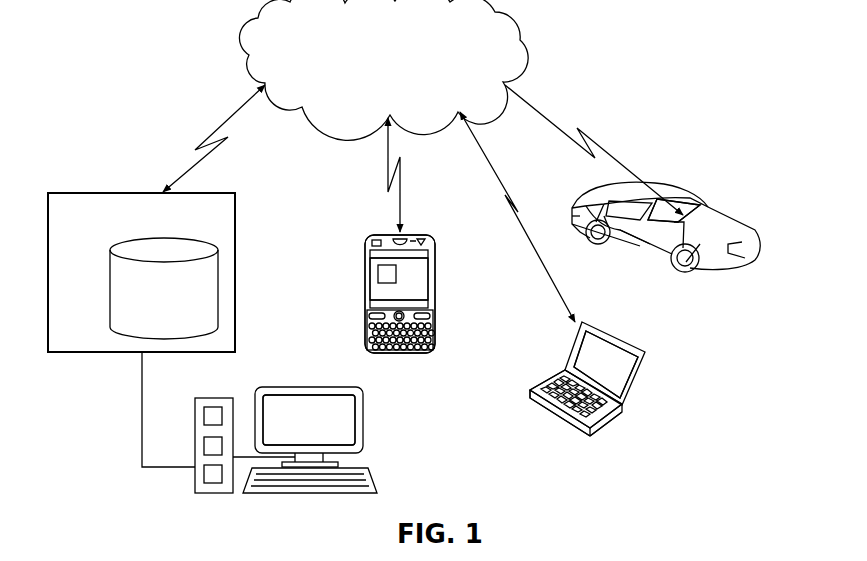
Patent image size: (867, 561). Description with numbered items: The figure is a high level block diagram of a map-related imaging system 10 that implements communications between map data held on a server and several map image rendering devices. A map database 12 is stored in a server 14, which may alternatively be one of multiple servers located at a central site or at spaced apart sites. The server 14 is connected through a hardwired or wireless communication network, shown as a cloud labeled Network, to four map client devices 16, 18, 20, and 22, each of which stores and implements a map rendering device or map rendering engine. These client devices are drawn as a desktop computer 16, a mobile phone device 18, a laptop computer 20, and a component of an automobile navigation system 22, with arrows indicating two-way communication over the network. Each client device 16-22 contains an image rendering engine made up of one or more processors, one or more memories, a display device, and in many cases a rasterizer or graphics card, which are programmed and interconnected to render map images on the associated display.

The map-related imaging system 10 is at (189, 63).
The map database 12 is at (219, 279).
The server 14 is at (94, 192).
The map client device 16 is at (374, 417).
The map client device 18 is at (433, 233).
The map client device 20 is at (650, 392).
The map client device 22 is at (746, 274).